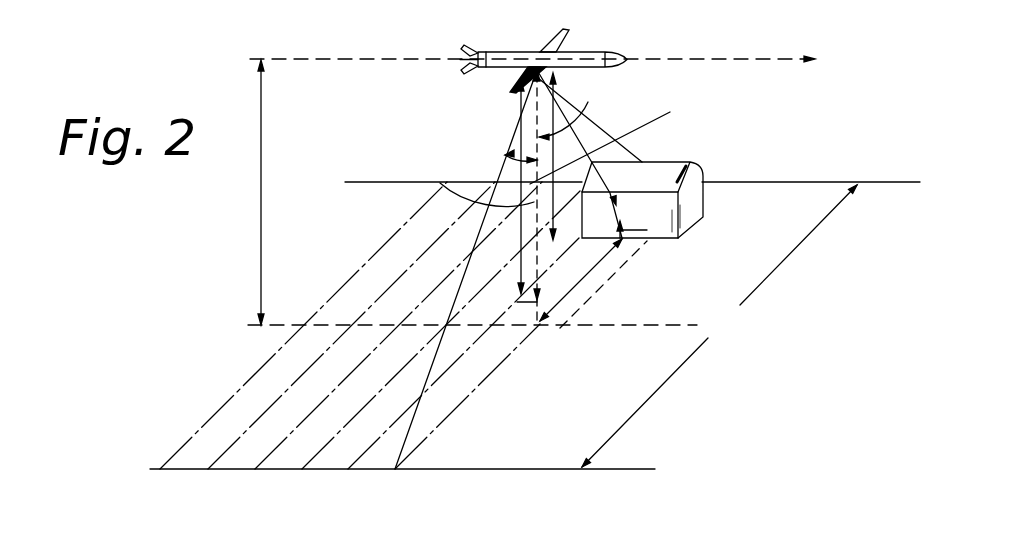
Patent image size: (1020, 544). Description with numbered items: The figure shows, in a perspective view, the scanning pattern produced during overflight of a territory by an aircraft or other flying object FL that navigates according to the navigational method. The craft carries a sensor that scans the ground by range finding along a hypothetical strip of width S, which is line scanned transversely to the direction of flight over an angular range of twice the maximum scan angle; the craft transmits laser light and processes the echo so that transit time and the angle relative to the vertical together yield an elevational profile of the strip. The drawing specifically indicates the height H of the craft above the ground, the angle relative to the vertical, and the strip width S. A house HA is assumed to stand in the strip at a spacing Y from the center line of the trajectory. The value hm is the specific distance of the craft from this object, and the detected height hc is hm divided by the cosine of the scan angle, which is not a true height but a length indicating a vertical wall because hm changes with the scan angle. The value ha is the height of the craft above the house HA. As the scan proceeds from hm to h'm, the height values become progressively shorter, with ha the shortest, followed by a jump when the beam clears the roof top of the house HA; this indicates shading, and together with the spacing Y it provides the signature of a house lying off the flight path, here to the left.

The flying object FL is at (503, 54).
The height of the craft above ground H is at (255, 192).
The width of the ground strip S is at (719, 326).
The spacing from the center line Y is at (598, 280).
The house HA is at (668, 165).
The height of the craft above the house ha is at (616, 140).
The distance of the craft from an object hm is at (606, 133).
The second distance of the craft from the object h'm is at (627, 127).
The detected height hc is at (483, 187).